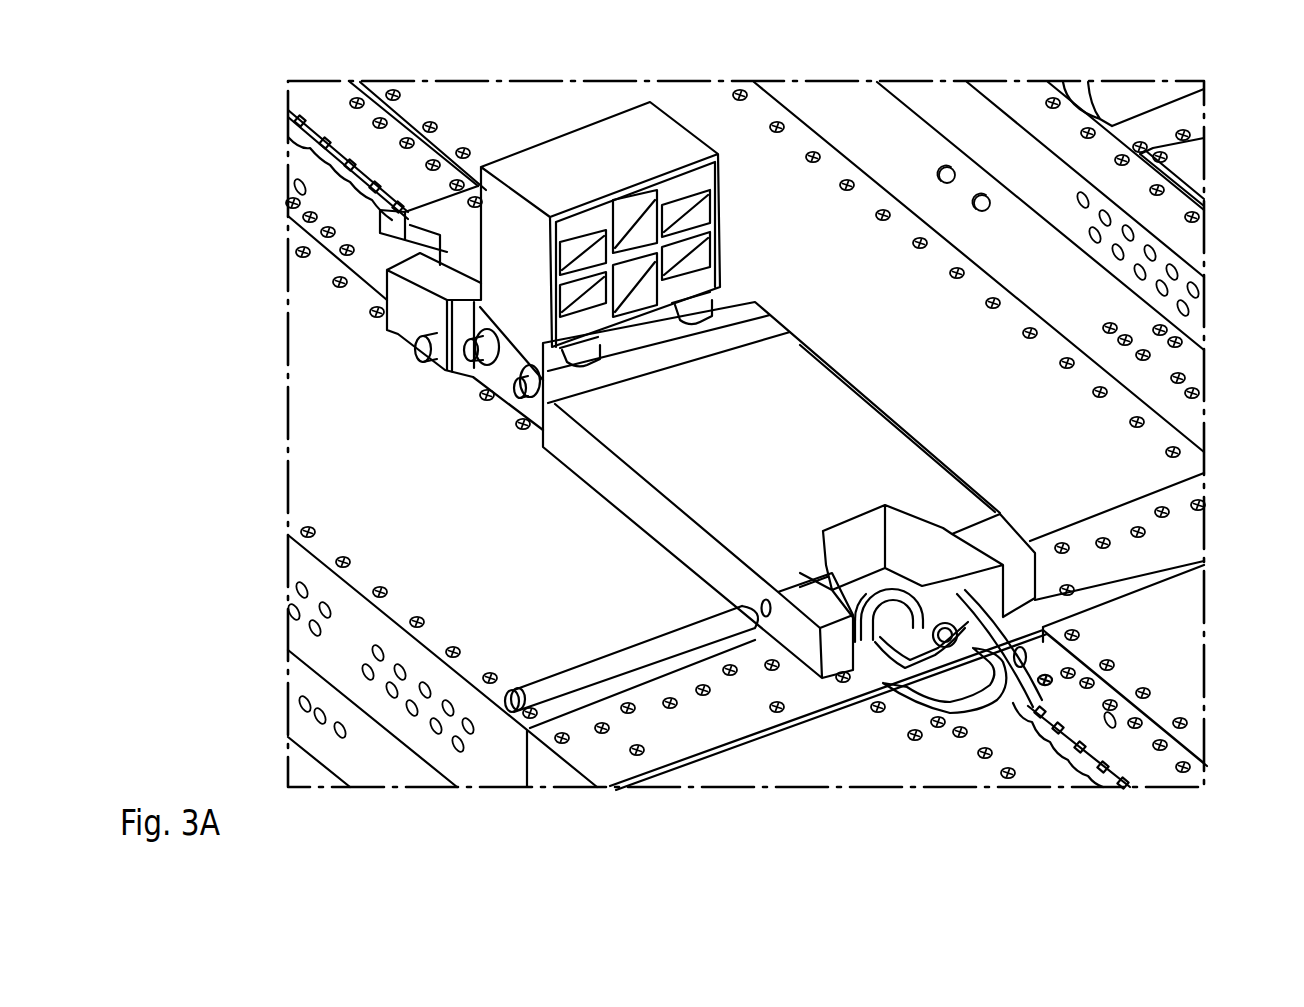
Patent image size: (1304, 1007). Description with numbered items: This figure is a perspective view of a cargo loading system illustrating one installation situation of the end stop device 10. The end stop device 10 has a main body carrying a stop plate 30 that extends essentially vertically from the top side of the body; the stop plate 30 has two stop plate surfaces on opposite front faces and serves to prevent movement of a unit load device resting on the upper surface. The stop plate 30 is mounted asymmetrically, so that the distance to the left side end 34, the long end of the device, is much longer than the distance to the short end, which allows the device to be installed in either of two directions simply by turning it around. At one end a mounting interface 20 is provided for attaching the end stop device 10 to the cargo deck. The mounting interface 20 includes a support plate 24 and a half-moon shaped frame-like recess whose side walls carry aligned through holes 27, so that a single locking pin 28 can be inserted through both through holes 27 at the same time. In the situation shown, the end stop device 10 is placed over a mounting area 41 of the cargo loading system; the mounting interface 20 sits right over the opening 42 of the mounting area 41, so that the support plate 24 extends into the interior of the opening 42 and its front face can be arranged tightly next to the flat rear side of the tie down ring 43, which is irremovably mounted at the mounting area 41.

The end stop device 10 is at (848, 418).
The mounting interface 20 is at (1032, 508).
The support plate 24 is at (935, 603).
The through hole 27 is at (768, 622).
The locking pin 28 is at (598, 668).
The stop plate 30 is at (633, 126).
The left side end 34 is at (921, 411).
The mounting area 41 is at (1070, 627).
The opening 42 is at (1018, 702).
The tie down ring 43 is at (1052, 679).